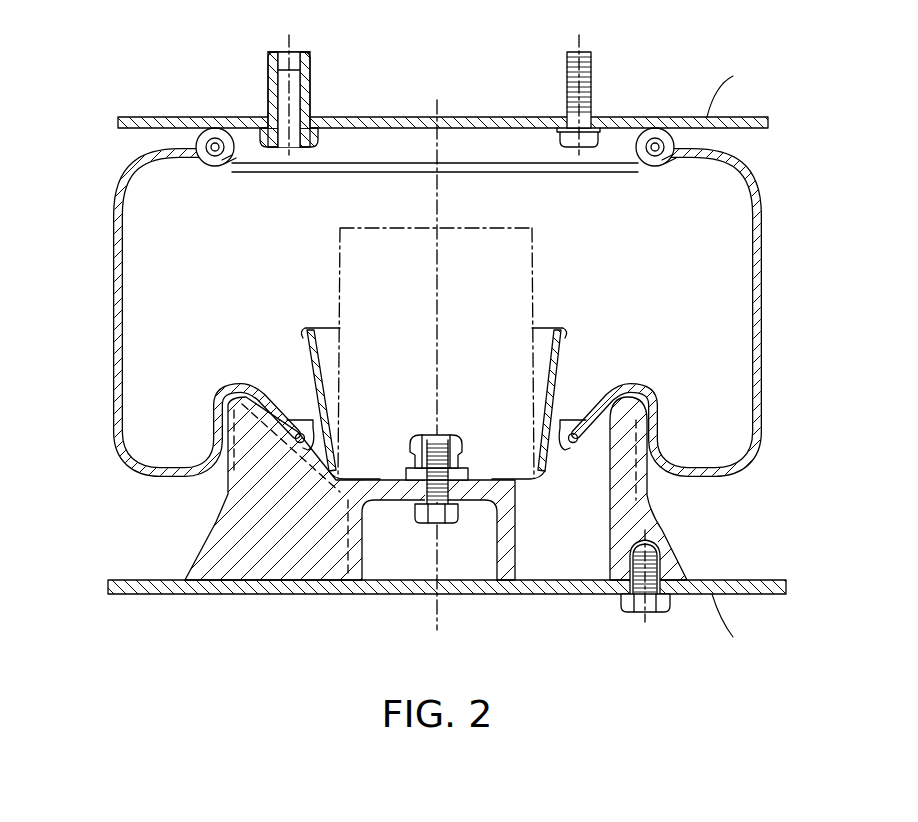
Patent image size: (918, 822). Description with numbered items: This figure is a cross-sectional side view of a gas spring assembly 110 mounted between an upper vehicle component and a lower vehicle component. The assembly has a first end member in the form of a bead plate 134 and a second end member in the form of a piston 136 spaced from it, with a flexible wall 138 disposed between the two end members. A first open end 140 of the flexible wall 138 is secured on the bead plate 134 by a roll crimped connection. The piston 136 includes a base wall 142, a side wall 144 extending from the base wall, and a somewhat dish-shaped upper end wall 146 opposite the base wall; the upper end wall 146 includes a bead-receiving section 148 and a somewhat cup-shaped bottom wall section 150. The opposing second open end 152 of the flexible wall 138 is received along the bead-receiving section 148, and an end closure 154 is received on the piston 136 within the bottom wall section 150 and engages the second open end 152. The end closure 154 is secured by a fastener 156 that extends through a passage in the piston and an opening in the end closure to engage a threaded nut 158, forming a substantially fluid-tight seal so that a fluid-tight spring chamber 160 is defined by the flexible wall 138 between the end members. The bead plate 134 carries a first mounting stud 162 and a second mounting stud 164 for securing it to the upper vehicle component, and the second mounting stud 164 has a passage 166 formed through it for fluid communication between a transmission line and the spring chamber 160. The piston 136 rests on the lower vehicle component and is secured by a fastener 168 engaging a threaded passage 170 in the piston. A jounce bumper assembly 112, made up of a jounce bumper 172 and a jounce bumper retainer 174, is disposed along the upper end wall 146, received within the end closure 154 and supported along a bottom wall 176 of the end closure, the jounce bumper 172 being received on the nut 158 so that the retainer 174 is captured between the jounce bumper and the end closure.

The gas spring assembly 110 is at (435, 337).
The jounce bumper assembly 112 is at (296, 252).
The bead plate 134 is at (438, 126).
The piston 136 is at (409, 523).
The flexible wall 138 is at (435, 312).
The first open end 140 is at (651, 145).
The base wall 142 is at (270, 594).
The side wall 144 is at (214, 522).
The upper end wall 146 is at (228, 482).
The bead-receiving section 148 is at (562, 438).
The bottom wall section 150 is at (558, 482).
The second open end 152 is at (571, 428).
The end closure 154 is at (318, 427).
The fastener 156 is at (420, 523).
The threaded nut 158 is at (470, 463).
The spring chamber 160 is at (157, 291).
The first mounting stud 162 is at (566, 72).
The second mounting stud 164 is at (311, 72).
The passage 166 is at (292, 55).
The fastener 168 is at (646, 614).
The threaded passage 170 is at (668, 548).
The jounce bumper 172 is at (533, 258).
The jounce bumper retainer 174 is at (309, 357).
The bottom wall 176 is at (382, 483).